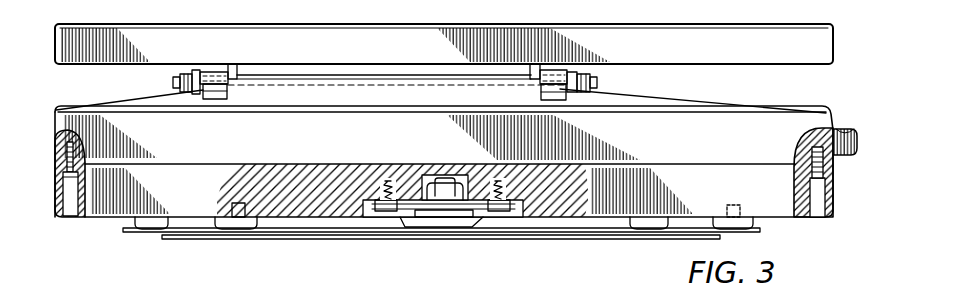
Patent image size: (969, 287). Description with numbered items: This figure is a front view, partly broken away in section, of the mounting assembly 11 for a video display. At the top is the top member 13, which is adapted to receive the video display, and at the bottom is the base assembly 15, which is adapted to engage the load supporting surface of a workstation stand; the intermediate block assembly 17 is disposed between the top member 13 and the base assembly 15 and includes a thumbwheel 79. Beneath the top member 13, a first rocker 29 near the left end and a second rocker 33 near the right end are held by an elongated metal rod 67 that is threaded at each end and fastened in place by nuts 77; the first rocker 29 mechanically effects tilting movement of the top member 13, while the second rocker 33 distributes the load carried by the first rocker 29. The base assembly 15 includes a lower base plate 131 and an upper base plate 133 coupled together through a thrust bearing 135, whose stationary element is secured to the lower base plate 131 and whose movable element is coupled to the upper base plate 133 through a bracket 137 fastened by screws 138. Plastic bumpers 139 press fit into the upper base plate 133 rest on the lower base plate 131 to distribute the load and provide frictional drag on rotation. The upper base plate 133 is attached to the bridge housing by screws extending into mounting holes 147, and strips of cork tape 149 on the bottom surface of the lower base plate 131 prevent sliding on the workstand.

The mounting assembly 11 is at (72, 80).
The top member 13 is at (833, 53).
The base assembly 15 is at (837, 190).
The intermediate block assembly 17 is at (55, 138).
The first rocker 29 is at (202, 99).
The second rocker 33 is at (550, 67).
The elongated metal rod 67 is at (173, 81).
The nuts 77 is at (196, 72).
The thumbwheel 79 is at (858, 139).
The lower base plate 131 is at (760, 232).
The upper base plate 133 is at (55, 199).
The thrust bearing 135 is at (436, 200).
The bracket 137 is at (410, 217).
The screws 138 is at (383, 197).
The bumpers 139 is at (184, 236).
The mounting holes 147 is at (54, 152).
The strips of cork tape 149 is at (313, 240).